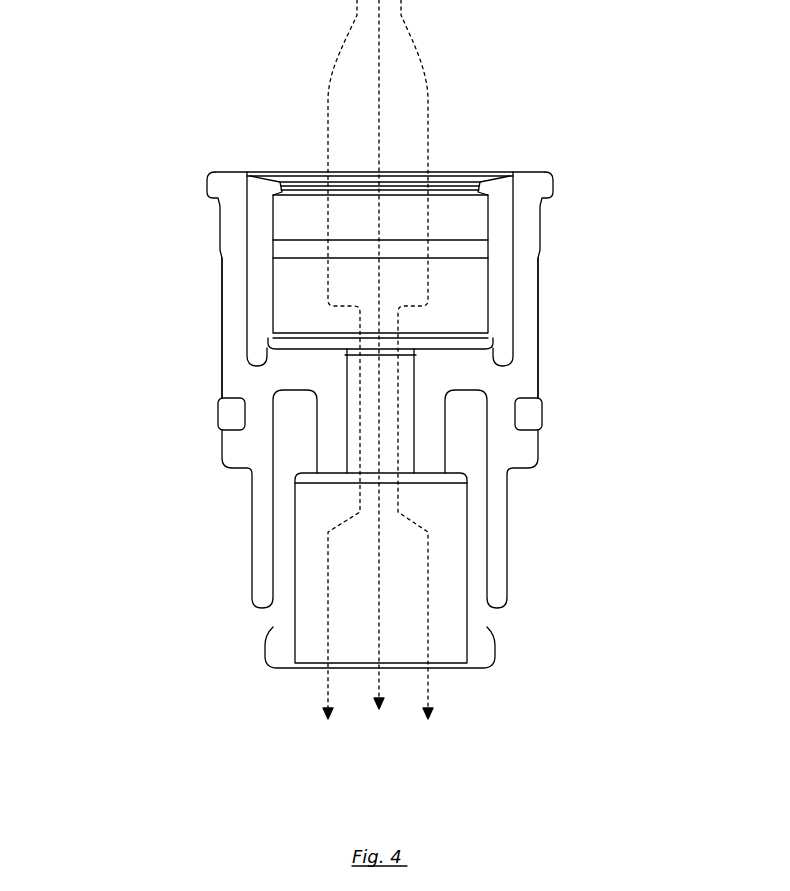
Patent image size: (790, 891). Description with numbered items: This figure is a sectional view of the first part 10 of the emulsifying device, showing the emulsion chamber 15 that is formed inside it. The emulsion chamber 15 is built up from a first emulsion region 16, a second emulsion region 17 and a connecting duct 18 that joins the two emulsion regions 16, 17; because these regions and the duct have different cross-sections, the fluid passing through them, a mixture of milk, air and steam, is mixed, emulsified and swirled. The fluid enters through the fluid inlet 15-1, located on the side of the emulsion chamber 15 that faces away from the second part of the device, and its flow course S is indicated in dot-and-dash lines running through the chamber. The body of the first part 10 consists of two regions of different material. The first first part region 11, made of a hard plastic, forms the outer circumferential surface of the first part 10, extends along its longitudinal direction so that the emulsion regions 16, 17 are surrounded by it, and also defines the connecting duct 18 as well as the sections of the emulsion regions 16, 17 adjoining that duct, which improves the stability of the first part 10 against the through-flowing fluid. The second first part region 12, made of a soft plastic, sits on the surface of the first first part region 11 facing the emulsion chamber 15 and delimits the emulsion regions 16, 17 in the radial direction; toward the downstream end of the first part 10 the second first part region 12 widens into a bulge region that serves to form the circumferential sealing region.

The first part 10 is at (128, 308).
The first first part region 11 is at (262, 552).
The second first part region 12 is at (506, 283).
The emulsion chamber 15 is at (473, 387).
The fluid inlet 15-1 is at (304, 158).
The first emulsion region 16 is at (473, 218).
The second emulsion region 17 is at (447, 545).
The connecting duct 18 is at (380, 458).
The flow course S is at (428, 133).